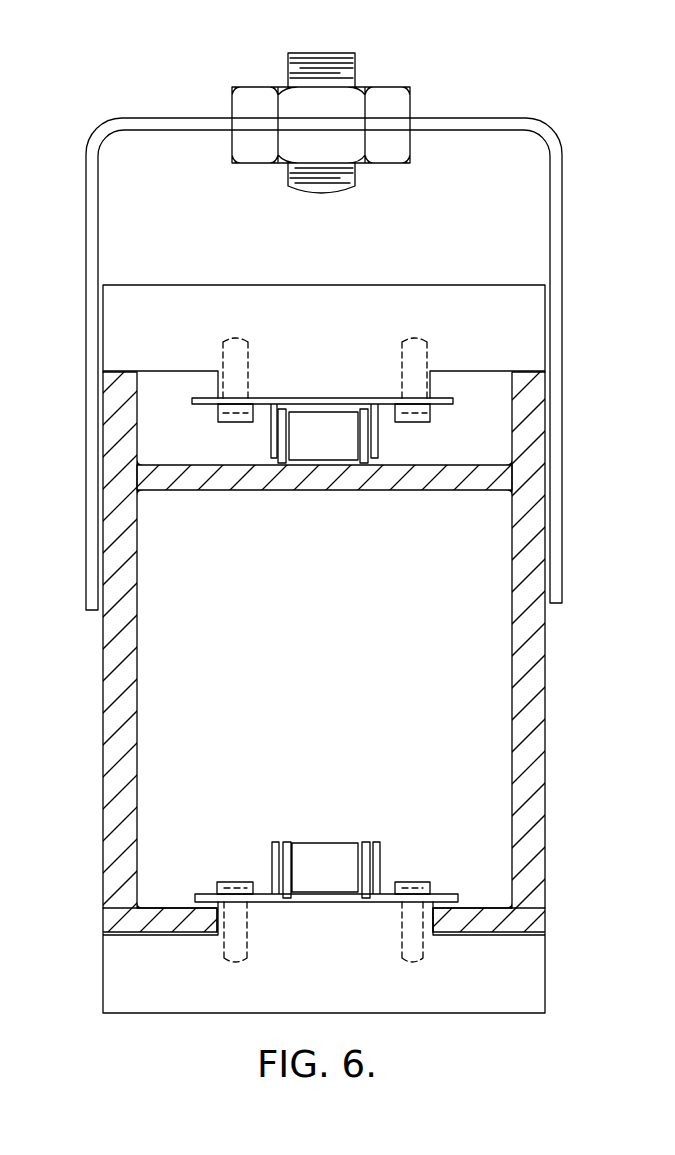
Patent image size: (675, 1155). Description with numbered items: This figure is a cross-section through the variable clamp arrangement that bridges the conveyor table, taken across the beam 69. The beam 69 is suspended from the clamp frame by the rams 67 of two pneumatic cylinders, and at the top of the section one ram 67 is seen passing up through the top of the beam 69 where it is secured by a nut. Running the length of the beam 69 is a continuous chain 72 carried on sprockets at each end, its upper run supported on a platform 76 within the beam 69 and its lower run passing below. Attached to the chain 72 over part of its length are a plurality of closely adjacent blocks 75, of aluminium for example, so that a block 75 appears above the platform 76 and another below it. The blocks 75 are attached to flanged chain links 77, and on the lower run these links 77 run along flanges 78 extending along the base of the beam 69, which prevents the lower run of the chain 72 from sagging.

The ram 67 is at (288, 63).
The beam 69 is at (533, 643).
The continuous chain 72 is at (343, 449).
The block 75 is at (331, 354).
The platform 76 is at (302, 480).
The flanged chain link 77 is at (199, 404).
The flange 78 is at (180, 917).